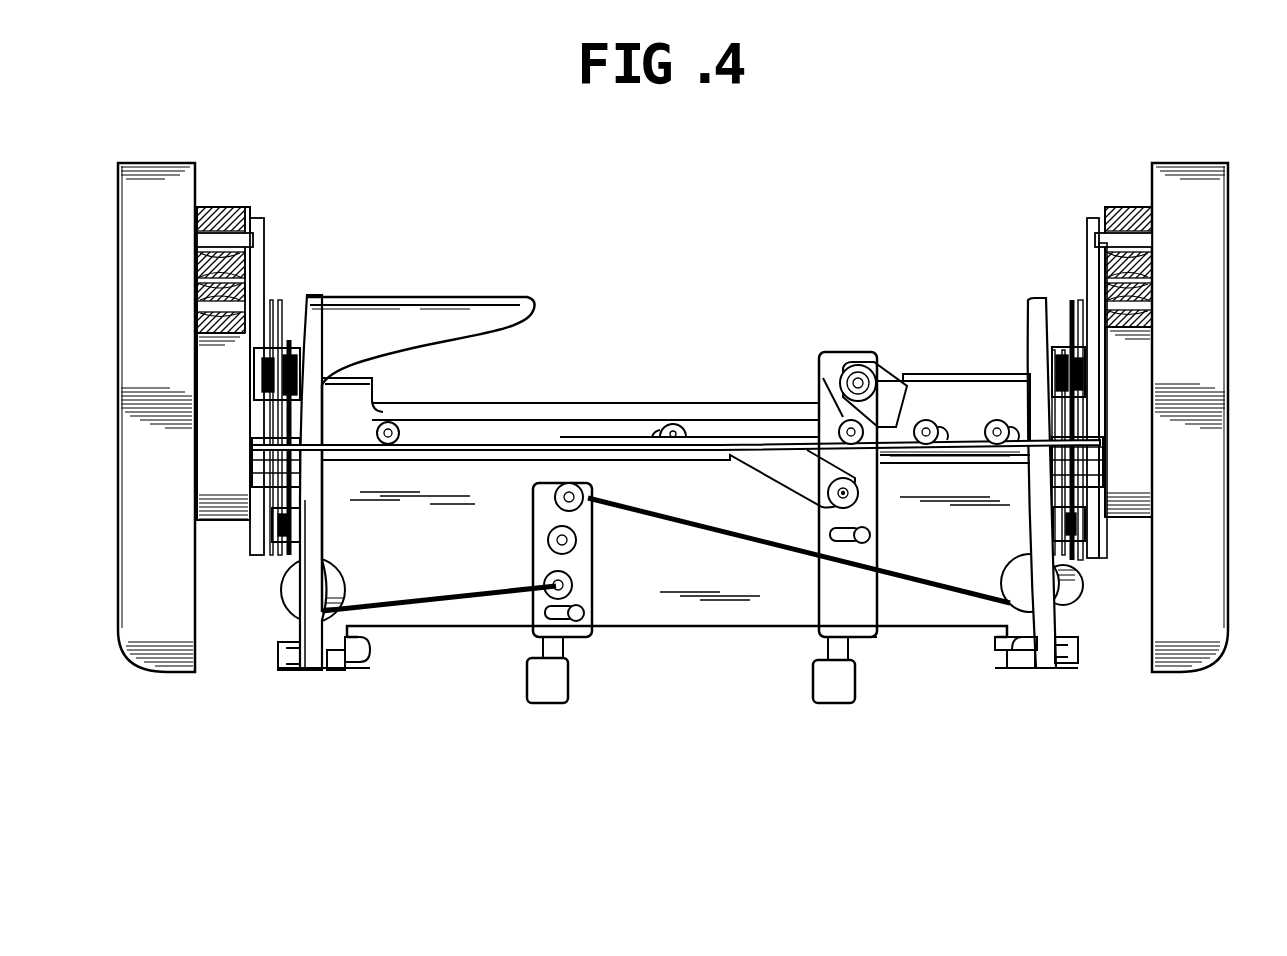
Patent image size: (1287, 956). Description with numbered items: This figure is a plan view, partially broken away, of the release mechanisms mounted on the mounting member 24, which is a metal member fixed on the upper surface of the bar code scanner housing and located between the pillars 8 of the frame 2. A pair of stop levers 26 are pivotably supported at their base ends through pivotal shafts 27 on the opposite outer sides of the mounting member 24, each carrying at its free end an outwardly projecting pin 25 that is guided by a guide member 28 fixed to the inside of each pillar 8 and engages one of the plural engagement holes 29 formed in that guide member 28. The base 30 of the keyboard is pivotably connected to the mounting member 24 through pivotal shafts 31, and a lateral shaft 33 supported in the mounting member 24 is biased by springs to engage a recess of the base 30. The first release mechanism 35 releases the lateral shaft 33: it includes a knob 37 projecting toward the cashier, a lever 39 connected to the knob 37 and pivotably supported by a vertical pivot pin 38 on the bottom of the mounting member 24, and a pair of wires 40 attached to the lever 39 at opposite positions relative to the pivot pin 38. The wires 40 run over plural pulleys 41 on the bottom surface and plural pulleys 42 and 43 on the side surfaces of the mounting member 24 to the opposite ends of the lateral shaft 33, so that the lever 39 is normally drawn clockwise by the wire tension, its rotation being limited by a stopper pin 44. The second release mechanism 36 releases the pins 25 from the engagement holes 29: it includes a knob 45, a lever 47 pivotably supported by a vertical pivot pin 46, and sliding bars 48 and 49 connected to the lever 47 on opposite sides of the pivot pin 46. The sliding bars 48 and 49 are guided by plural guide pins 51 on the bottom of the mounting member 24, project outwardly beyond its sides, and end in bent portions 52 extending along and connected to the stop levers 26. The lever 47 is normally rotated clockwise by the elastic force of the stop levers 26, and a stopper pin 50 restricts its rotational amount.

The frame 2 is at (166, 674).
The pillars 8 is at (200, 633).
The mounting member 24 is at (685, 614).
The pin 25 is at (233, 236).
The stop levers 26 is at (267, 225).
The pivotal shafts 27 is at (277, 468).
The guide members 28 is at (216, 207).
The engagement holes 29 is at (228, 310).
The base 30 is at (440, 300).
The pivotal shafts 31 is at (345, 672).
The lateral shaft 33 is at (750, 440).
The first release mechanism 35 is at (540, 643).
The second release mechanism 36 is at (860, 585).
The knob 37 is at (550, 690).
The vertical pivot pin 38 is at (556, 540).
The lever 39 is at (593, 572).
The wires 40 is at (423, 604).
The pulleys 41 is at (290, 590).
The pulleys 42 is at (287, 547).
The pulleys 43 is at (277, 402).
The stopper pin 44 is at (578, 622).
The knob 45 is at (840, 684).
The vertical pivot pin 46 is at (816, 396).
The lever 47 is at (861, 492).
The sliding bar 48 is at (912, 407).
The sliding bar 49 is at (543, 424).
The stopper pin 50 is at (872, 534).
The guide pins 51 is at (391, 428).
The bent portion 52 is at (276, 310).